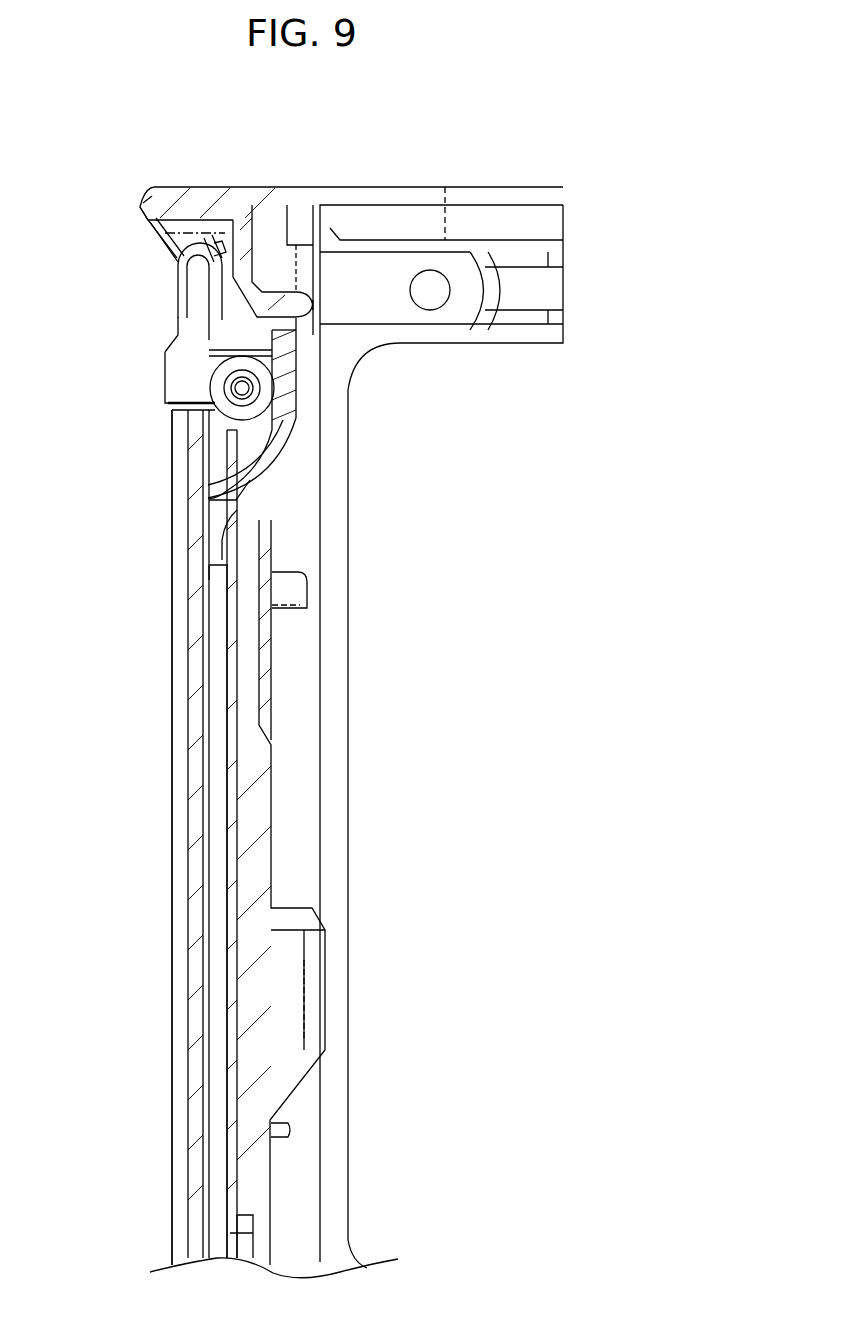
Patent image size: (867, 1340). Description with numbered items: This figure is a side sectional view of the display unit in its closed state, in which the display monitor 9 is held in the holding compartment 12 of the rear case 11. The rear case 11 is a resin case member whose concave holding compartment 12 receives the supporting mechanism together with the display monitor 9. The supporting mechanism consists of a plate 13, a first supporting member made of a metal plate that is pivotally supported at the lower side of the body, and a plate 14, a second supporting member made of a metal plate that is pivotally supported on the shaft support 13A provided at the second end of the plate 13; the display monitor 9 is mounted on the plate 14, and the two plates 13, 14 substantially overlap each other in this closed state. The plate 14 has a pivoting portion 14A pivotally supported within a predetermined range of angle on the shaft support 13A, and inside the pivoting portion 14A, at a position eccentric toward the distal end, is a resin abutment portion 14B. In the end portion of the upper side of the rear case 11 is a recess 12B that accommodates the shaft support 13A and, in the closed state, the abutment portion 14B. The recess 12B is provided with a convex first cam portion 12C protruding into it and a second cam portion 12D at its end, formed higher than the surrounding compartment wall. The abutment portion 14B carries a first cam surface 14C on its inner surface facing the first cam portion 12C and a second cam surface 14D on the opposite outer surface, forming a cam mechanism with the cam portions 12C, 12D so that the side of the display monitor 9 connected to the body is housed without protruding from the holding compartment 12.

The display monitor 9 is at (172, 480).
The rear case 11 is at (272, 645).
The holding compartment 12 is at (232, 755).
The recess 12B is at (300, 440).
The first cam portion 12C is at (252, 297).
The second cam portion 12D is at (145, 203).
The plate 13 is at (217, 577).
The shaft support 13A is at (215, 513).
The plate 14 is at (197, 612).
The pivoting portion 14A is at (227, 265).
The abutment portion 14B is at (185, 373).
The first cam surface 14C is at (212, 290).
The second cam surface 14D is at (177, 277).